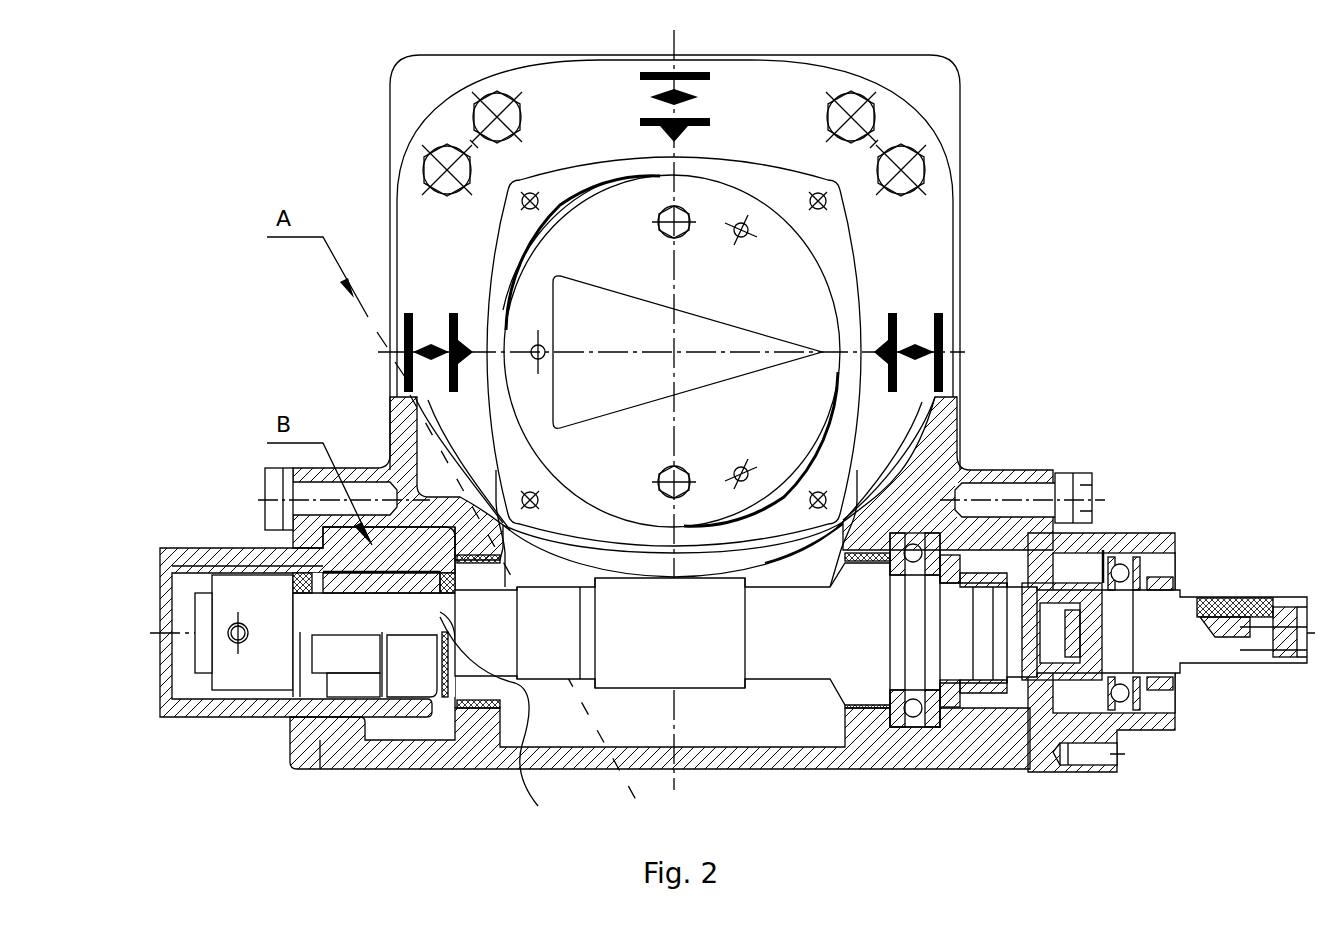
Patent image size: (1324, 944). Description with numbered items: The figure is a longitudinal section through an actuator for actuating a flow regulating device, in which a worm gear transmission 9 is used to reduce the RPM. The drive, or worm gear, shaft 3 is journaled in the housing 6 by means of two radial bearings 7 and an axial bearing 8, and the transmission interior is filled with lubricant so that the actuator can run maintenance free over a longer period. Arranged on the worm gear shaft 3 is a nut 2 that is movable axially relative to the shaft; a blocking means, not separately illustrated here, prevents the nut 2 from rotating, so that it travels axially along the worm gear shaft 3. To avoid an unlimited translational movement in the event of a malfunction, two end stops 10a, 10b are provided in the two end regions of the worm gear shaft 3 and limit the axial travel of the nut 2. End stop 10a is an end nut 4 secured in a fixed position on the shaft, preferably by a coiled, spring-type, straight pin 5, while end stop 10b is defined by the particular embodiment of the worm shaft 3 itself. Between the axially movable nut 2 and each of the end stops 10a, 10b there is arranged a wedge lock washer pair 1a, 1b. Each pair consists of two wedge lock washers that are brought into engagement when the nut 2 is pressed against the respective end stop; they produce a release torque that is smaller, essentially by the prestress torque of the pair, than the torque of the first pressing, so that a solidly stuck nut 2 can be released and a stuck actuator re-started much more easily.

The wedge lock washer pair 1a is at (302, 687).
The wedge lock washer pair 1b is at (448, 684).
The nut 2 is at (408, 667).
The worm gear shaft 3 is at (708, 653).
The end nut 4 is at (270, 667).
The coiled, spring-type, straight pin 5 is at (238, 645).
The housing 6 is at (332, 707).
The radial bearing 7 is at (490, 708).
The axial bearing 8 is at (913, 708).
The worm gear transmission 9 is at (1018, 147).
The end stop 10a is at (226, 548).
The end stop 10b is at (496, 725).